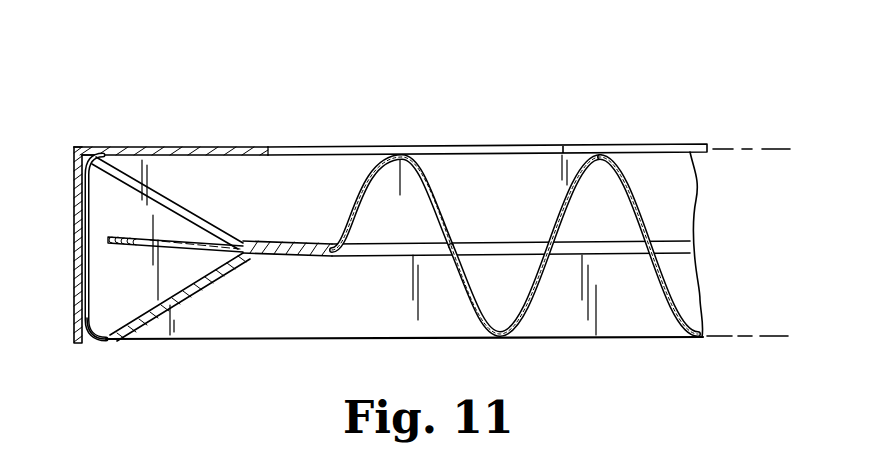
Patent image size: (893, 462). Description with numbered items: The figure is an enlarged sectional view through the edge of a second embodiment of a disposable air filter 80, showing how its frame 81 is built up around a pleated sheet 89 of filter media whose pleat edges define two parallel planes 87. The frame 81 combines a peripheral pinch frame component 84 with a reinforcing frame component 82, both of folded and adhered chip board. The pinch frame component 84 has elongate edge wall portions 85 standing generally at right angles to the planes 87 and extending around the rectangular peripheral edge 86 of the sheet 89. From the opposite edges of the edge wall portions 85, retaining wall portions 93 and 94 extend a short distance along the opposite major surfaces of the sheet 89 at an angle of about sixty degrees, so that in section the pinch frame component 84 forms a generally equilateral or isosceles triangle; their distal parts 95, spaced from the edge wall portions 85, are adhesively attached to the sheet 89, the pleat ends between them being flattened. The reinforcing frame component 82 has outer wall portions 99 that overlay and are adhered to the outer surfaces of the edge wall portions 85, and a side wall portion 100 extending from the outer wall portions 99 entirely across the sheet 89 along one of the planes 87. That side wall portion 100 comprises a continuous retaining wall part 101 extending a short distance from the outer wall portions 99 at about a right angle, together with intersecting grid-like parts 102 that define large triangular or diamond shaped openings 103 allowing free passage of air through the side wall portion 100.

The disposable air filter 80 is at (630, 88).
The frame 81 is at (211, 142).
The reinforcing frame component 82 is at (346, 142).
The peripheral pinch frame component 84 is at (93, 350).
The edge wall portions 85 is at (82, 262).
The peripheral edge 86 is at (115, 245).
The parallel planes 87 is at (735, 148).
The pleated sheet of filter media 89 is at (690, 282).
The retaining wall portion 93 is at (188, 297).
The retaining wall portion 94 is at (190, 202).
The distal parts 95 is at (300, 240).
The outer wall portions 99 is at (74, 201).
The side wall portion 100 is at (486, 146).
The retaining wall part 101 is at (127, 146).
The grid-like parts 102 is at (545, 146).
The openings 103 is at (441, 146).